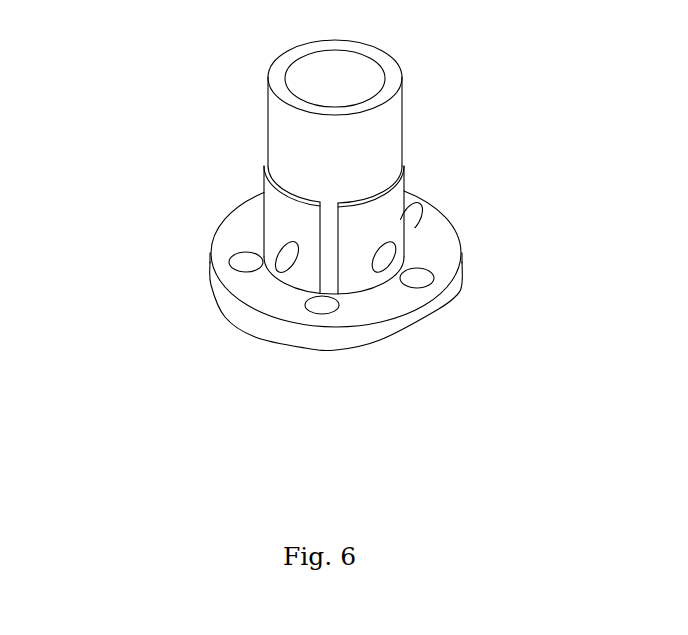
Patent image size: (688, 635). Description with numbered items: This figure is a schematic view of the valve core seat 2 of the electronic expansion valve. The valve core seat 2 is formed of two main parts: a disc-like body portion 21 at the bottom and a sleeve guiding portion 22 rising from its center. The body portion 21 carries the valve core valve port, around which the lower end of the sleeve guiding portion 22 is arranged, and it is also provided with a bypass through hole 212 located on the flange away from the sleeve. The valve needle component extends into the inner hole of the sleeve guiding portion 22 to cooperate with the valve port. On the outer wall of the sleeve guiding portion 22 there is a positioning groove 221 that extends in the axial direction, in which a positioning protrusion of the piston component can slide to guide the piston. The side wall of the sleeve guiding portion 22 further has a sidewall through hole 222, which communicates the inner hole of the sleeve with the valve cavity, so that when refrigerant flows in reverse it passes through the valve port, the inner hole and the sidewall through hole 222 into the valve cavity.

The valve core seat 2 is at (78, 167).
The body portion 21 is at (250, 232).
The bypass through hole 212 is at (322, 305).
The sleeve guiding portion 22 is at (285, 142).
The positioning groove 221 is at (330, 247).
The sidewall through hole 222 is at (383, 258).